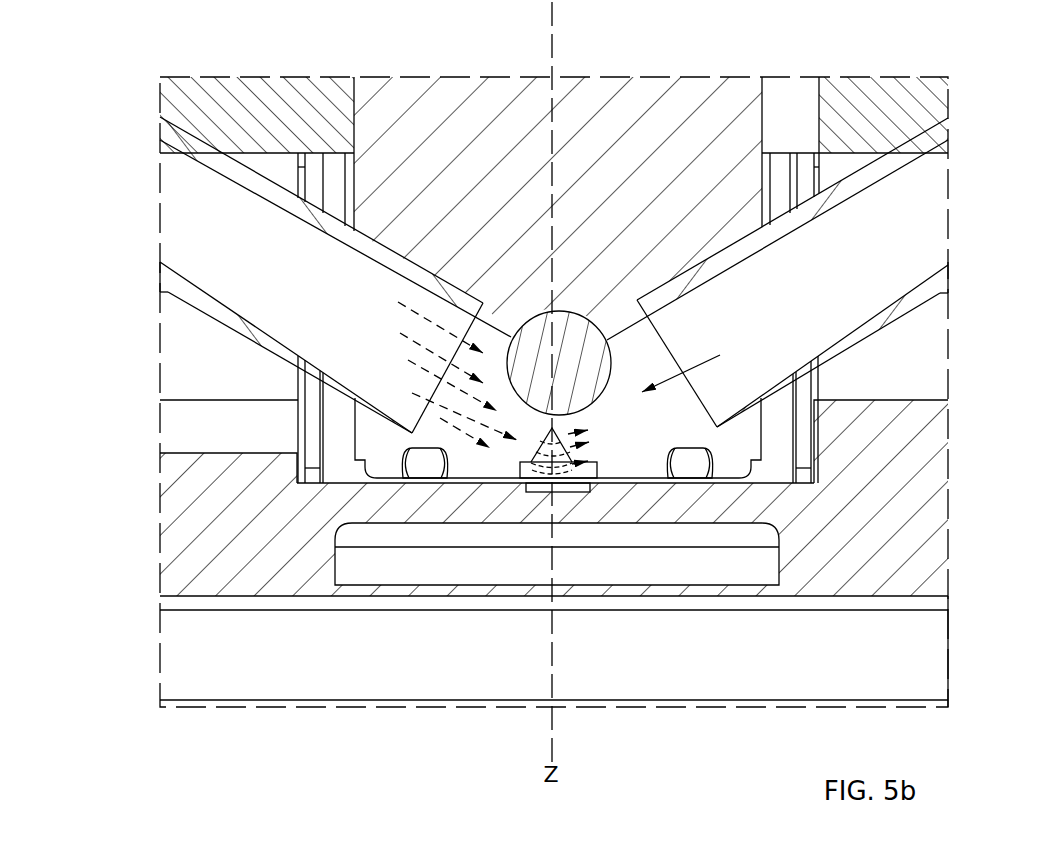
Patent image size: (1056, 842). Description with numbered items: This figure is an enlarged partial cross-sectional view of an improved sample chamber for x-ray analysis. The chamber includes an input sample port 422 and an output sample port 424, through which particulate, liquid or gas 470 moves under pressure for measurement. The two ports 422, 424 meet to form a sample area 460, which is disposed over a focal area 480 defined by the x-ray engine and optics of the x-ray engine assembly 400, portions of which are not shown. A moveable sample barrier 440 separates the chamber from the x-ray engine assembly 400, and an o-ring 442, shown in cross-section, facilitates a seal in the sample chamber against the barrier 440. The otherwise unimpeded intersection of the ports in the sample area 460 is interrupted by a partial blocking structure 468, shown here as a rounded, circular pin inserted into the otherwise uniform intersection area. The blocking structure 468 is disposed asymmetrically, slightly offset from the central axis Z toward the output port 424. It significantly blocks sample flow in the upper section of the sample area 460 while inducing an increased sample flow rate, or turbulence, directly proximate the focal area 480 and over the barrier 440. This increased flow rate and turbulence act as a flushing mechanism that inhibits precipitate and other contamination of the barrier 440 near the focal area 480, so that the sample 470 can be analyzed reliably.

The x-ray engine assembly 400 is at (203, 678).
The input sample port 422 is at (192, 219).
The output sample port 424 is at (905, 227).
The moveable sample barrier 440 is at (657, 491).
The o-ring 442 is at (423, 472).
The sample area 460 is at (703, 387).
The partial blocking structure 468 is at (516, 326).
The particulate, liquid or gas 470 is at (405, 336).
The focal area 480 is at (543, 497).